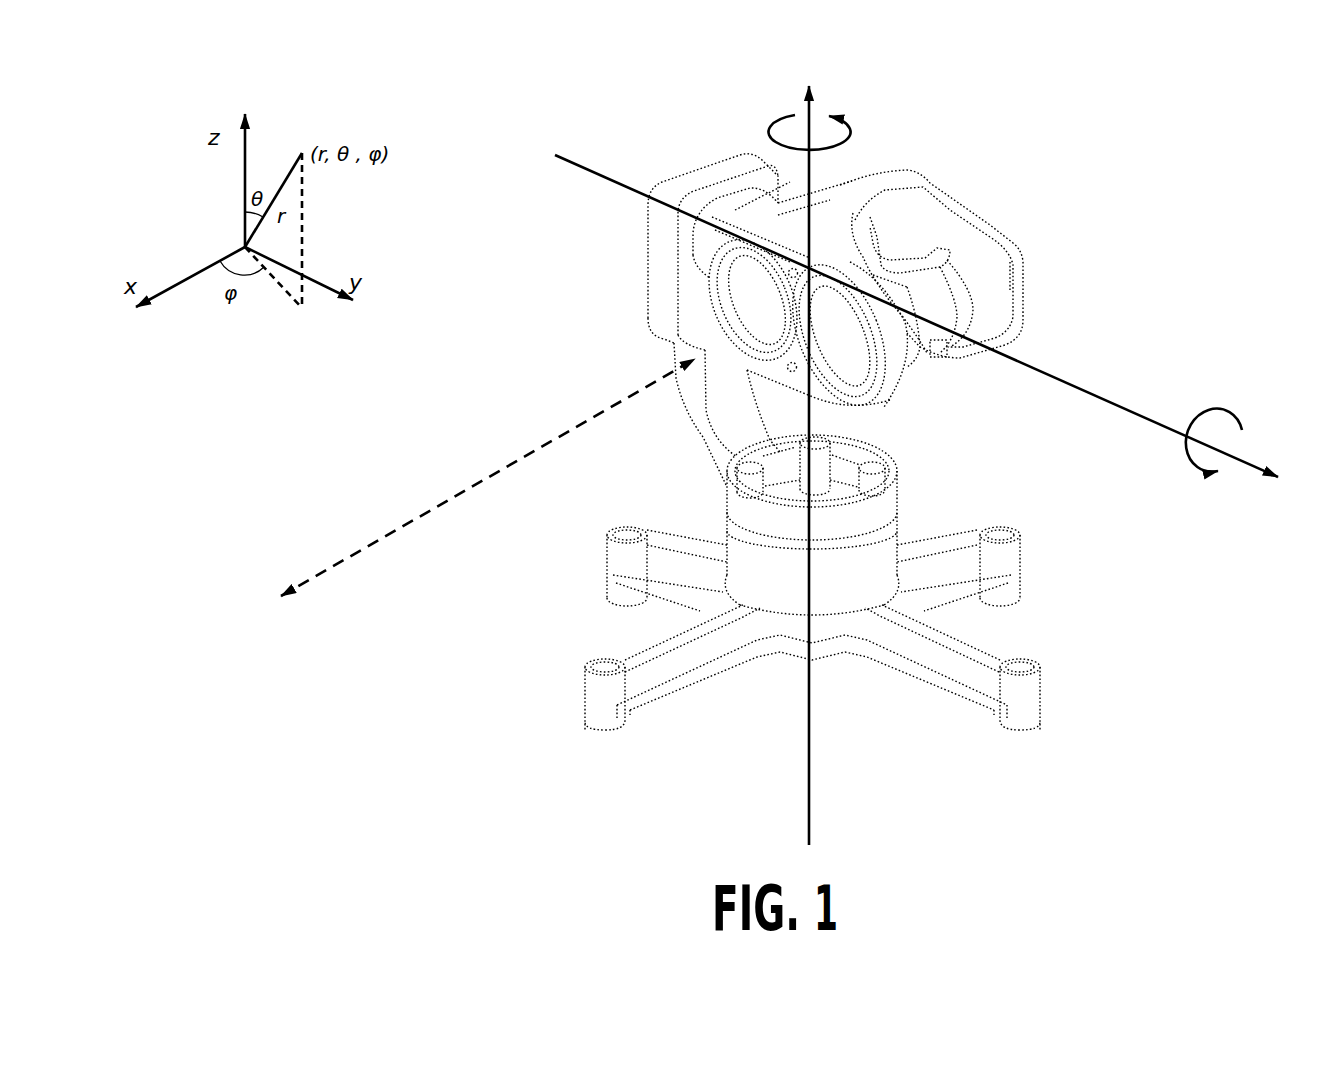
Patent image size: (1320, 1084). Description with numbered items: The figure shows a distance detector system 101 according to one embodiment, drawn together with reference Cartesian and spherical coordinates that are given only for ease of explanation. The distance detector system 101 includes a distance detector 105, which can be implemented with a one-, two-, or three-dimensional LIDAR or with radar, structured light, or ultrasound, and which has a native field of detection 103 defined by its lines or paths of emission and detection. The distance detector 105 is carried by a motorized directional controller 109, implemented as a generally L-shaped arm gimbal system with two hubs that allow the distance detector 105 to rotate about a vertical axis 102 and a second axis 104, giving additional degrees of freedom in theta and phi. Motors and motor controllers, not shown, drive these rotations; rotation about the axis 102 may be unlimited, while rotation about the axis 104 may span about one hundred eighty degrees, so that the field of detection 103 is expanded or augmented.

The distance detector system 101 is at (1113, 177).
The axis 102 is at (808, 682).
The field of detection 103 is at (443, 503).
The axis 104 is at (1112, 403).
The distance detector 105 is at (893, 380).
The motorized directional controller 109 is at (677, 415).